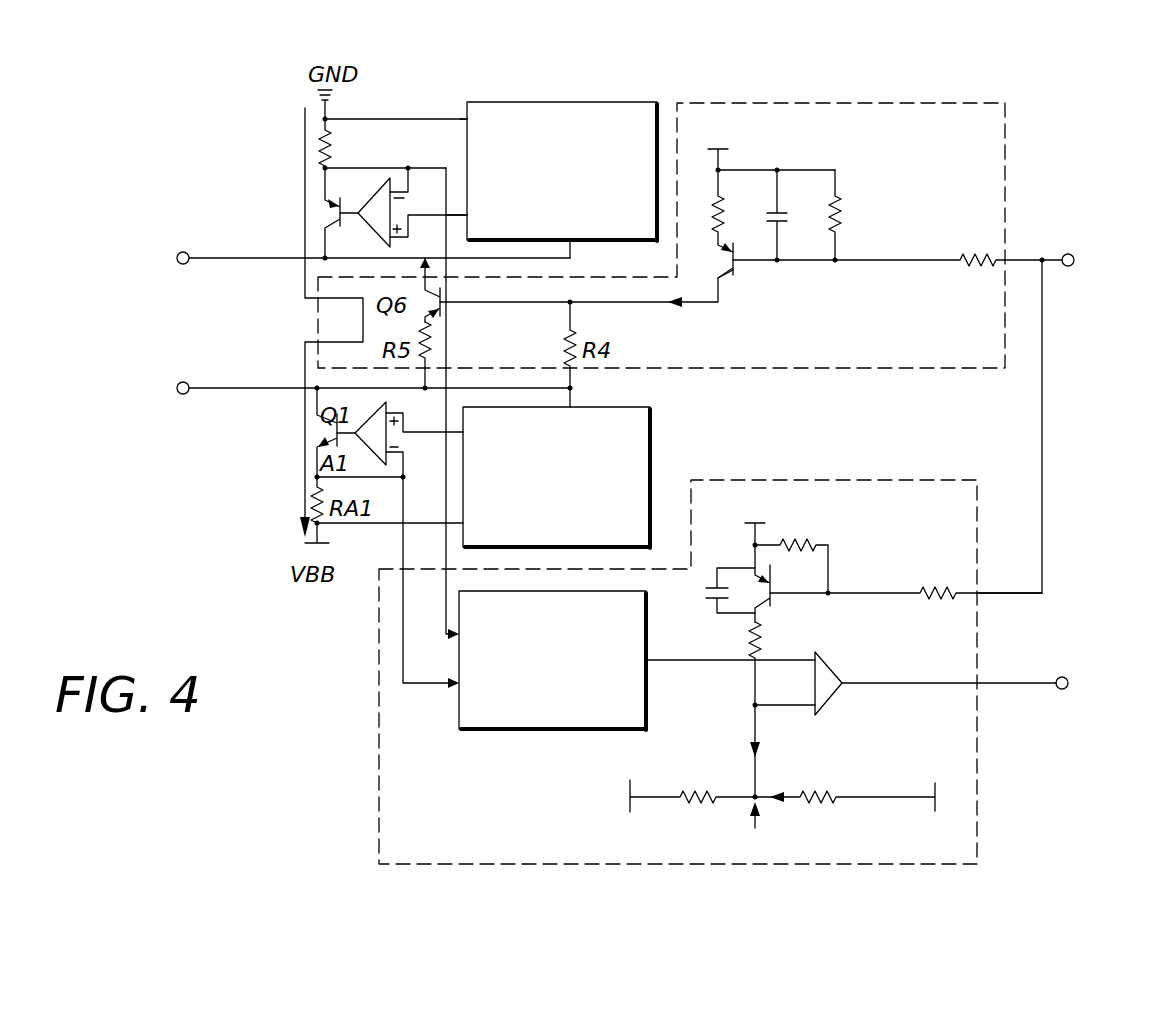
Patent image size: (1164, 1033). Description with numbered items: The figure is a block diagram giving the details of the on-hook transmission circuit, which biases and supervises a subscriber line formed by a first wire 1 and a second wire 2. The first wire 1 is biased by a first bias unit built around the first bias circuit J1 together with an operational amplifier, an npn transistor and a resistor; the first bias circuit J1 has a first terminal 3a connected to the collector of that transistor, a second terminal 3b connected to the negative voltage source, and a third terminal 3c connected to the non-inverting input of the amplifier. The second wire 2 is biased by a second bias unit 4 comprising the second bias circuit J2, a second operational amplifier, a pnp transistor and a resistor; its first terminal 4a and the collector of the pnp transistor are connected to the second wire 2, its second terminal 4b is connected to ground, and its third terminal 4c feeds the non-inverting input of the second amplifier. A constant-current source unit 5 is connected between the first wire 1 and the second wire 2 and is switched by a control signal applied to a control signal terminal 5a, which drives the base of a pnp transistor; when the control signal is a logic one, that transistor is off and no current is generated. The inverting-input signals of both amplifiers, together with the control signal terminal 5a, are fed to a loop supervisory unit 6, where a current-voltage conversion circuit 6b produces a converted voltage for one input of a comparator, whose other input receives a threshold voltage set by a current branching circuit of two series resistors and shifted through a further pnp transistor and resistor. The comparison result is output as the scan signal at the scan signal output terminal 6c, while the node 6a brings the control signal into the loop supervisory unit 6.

The first wire 1 is at (183, 382).
The second wire 2 is at (183, 252).
The first terminal 3a is at (571, 406).
The second terminal 3b is at (458, 529).
The third terminal 3c is at (455, 432).
The second bias unit 4 is at (402, 70).
The first terminal 4a is at (576, 242).
The second terminal 4b is at (467, 119).
The third terminal 4c is at (460, 215).
The constant-current source unit 5 is at (1006, 210).
The control signal terminal 5a is at (1068, 267).
The loop supervisory unit 6 is at (922, 480).
The loop supervisory unit input terminal 6a is at (998, 594).
The current-voltage conversion circuit 6b is at (459, 729).
The scan signal output terminal 6c is at (1062, 677).
The first bias circuit J1 is at (655, 432).
The second bias circuit J2 is at (556, 102).